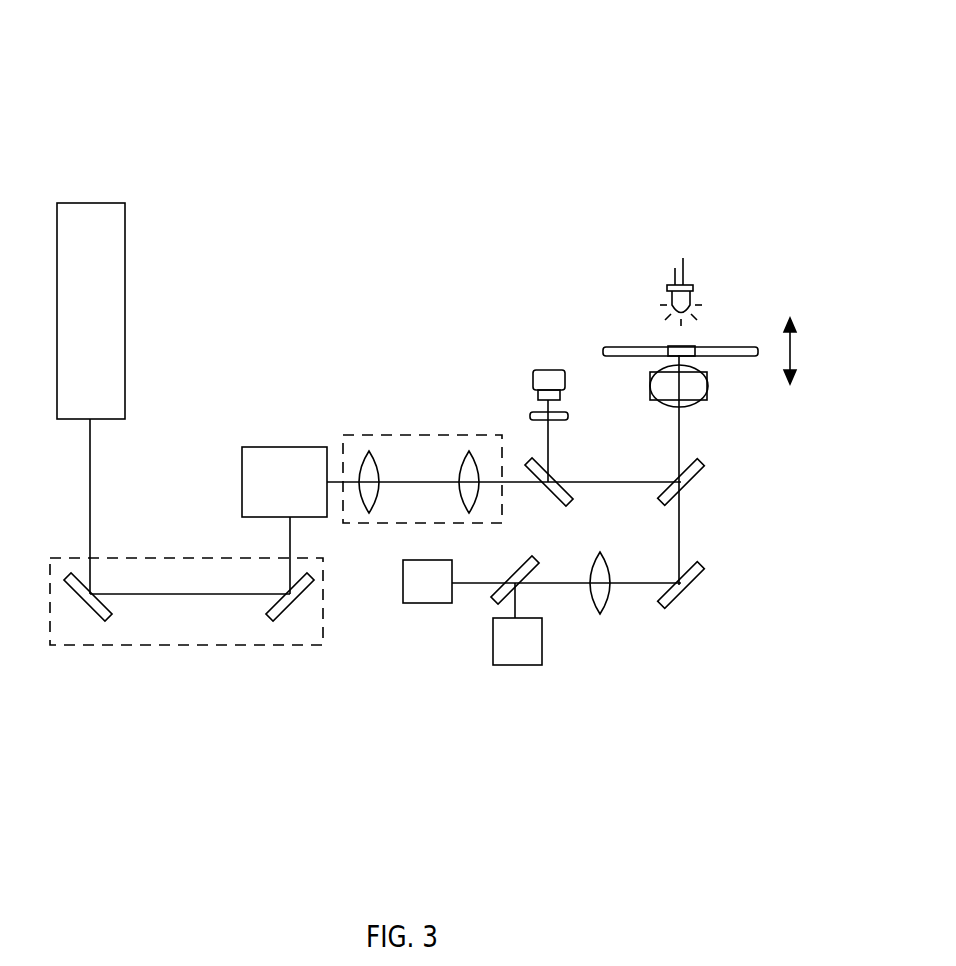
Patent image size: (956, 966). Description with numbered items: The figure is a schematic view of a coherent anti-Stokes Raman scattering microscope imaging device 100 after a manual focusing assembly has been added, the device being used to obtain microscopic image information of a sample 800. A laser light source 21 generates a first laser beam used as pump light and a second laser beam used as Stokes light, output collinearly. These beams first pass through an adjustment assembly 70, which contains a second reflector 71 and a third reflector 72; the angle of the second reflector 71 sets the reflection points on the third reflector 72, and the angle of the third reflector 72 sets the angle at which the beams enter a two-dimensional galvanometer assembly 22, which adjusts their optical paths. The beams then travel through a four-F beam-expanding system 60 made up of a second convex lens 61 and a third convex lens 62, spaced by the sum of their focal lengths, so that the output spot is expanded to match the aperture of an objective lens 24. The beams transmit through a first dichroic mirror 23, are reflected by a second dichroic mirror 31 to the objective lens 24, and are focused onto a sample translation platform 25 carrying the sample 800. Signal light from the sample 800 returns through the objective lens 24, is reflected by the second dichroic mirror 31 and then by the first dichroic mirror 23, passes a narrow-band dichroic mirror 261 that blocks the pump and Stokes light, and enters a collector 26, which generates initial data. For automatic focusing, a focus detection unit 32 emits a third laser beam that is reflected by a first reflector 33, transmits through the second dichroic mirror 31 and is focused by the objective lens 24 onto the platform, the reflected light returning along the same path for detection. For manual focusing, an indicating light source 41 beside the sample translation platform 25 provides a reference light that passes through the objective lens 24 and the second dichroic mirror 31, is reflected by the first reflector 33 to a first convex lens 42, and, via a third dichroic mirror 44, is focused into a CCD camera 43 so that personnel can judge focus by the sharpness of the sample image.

The coherent anti-Stokes Raman scattering microscope imaging device 100 is at (192, 33).
The laser light source 21 is at (103, 217).
The two-dimensional galvanometer assembly 22 is at (252, 462).
The first dichroic mirror 23 is at (563, 500).
The objective lens 24 is at (713, 350).
The sample translation platform 25 is at (698, 383).
The collector 26 is at (548, 377).
The narrow-band dichroic mirror 261 is at (565, 415).
The second dichroic mirror 31 is at (700, 473).
The focus detection unit 32 is at (417, 583).
The first reflector 33 is at (690, 590).
The indicating light source 41 is at (688, 286).
The first convex lens 42 is at (603, 600).
The CCD camera 43 is at (500, 653).
The third dichroic mirror 44 is at (530, 583).
The 4F system 60 is at (408, 435).
The second convex lens 61 is at (370, 460).
The third convex lens 62 is at (473, 453).
The adjustment assembly 70 is at (90, 645).
The second reflector 71 is at (108, 613).
The third reflector 72 is at (278, 618).
The sample 800 is at (668, 347).